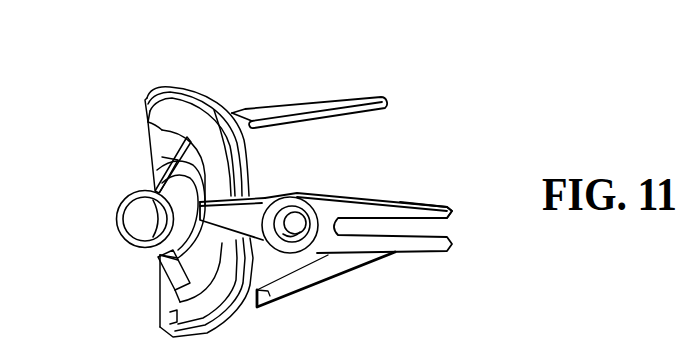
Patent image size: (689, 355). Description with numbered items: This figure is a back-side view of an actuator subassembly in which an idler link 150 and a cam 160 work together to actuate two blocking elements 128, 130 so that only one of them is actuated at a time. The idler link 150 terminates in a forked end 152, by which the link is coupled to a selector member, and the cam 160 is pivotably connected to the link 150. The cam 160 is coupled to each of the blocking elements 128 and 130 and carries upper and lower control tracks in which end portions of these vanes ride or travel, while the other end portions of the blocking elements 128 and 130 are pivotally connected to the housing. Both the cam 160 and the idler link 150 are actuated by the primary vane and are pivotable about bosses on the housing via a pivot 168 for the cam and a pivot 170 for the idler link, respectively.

The cam 160 is at (188, 83).
The blocking element 128 is at (331, 95).
The idler link 150 is at (336, 197).
The forked end 152 is at (450, 204).
The pivot 168 is at (143, 230).
The pivot 170 is at (288, 240).
The blocking element 130 is at (321, 282).